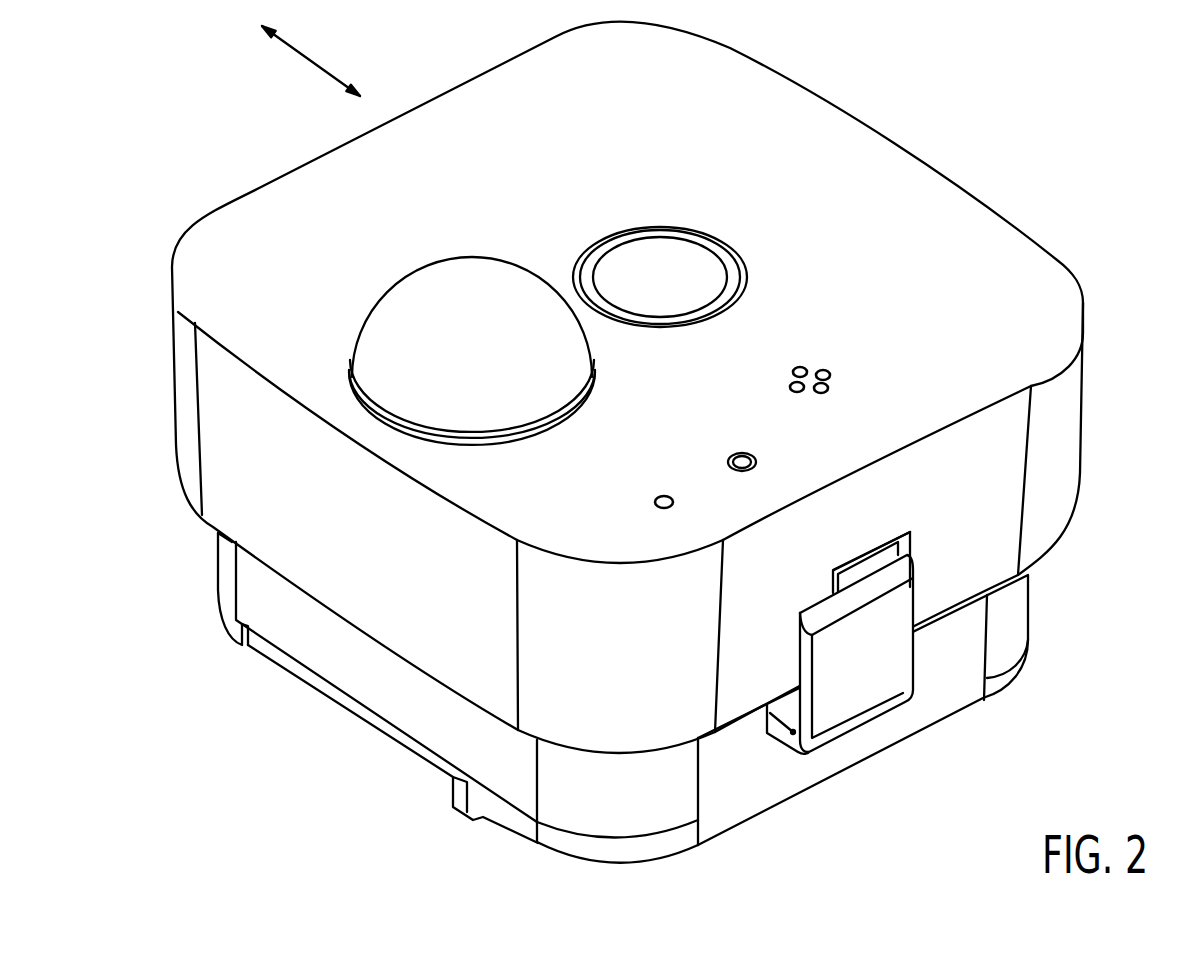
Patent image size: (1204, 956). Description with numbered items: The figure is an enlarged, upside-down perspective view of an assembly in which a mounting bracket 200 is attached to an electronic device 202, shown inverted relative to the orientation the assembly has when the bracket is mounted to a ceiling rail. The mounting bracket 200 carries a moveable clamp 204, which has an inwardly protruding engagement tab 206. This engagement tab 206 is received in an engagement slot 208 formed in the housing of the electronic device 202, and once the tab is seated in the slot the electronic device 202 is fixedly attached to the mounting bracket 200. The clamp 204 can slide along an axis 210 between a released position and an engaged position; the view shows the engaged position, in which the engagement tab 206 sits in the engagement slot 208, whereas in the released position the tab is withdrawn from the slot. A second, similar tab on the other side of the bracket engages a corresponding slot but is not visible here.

The mounting bracket 200 is at (958, 672).
The electronic device 202 is at (1058, 403).
The moveable clamp 204 is at (859, 674).
The engagement tab 206 is at (857, 572).
The engagement slot 208 is at (907, 548).
The axis 210 is at (307, 66).